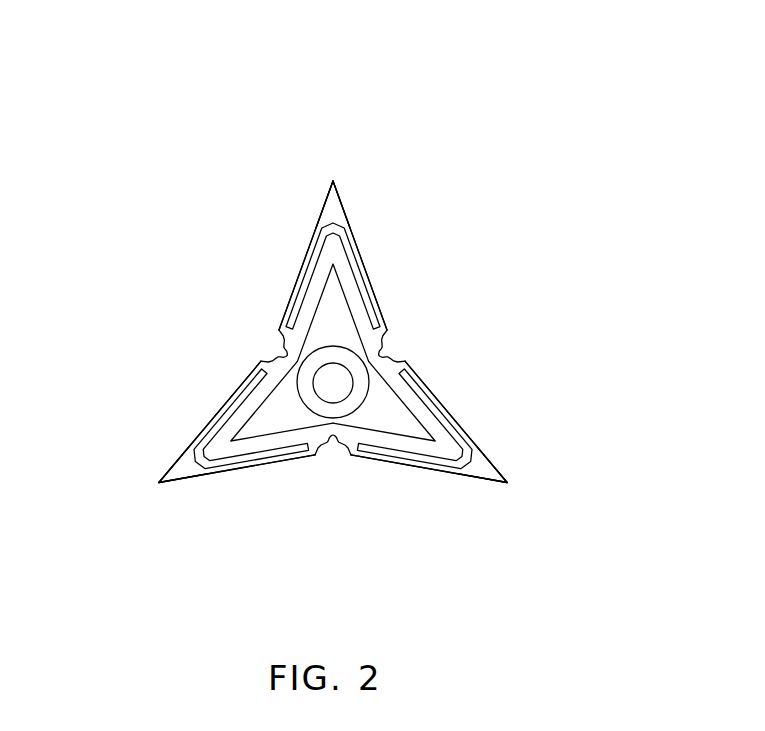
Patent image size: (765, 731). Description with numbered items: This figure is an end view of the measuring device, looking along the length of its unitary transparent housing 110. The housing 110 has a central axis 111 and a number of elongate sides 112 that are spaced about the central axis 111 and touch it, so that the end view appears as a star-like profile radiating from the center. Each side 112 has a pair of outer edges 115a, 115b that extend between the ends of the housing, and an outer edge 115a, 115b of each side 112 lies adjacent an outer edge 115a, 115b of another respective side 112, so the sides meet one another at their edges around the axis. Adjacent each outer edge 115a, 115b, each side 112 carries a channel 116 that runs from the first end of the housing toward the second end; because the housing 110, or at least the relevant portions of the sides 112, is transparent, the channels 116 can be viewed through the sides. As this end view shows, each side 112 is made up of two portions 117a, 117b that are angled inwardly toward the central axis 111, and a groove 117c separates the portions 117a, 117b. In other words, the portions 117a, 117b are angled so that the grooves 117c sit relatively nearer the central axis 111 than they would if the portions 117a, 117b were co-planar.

The transparent housing 110 is at (387, 117).
The central axis 111 is at (220, 317).
The side 112 is at (167, 375).
The outer edge 115a is at (327, 203).
The outer edge 115b is at (320, 224).
The channel 116 is at (315, 262).
The portion 117a is at (272, 266).
The portion 117b is at (213, 376).
The groove 117c is at (263, 341).